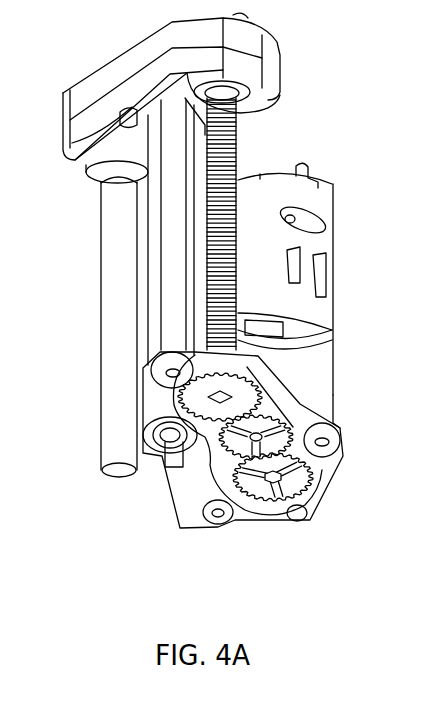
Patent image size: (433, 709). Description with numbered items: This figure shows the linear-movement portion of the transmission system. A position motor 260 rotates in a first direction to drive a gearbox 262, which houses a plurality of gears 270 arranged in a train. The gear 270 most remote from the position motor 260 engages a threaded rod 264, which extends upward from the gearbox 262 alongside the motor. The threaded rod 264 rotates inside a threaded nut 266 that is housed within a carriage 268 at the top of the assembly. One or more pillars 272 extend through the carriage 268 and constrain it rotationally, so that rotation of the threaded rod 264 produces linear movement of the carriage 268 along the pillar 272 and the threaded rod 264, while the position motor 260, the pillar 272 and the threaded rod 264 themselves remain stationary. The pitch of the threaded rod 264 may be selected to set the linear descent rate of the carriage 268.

The position motor 260 is at (320, 207).
The gearbox 262 is at (320, 370).
The threaded rod 264 is at (237, 157).
The threaded nut 266 is at (237, 93).
The carriage 268 is at (115, 70).
The gears 270 is at (240, 487).
The pillar 272 is at (115, 290).